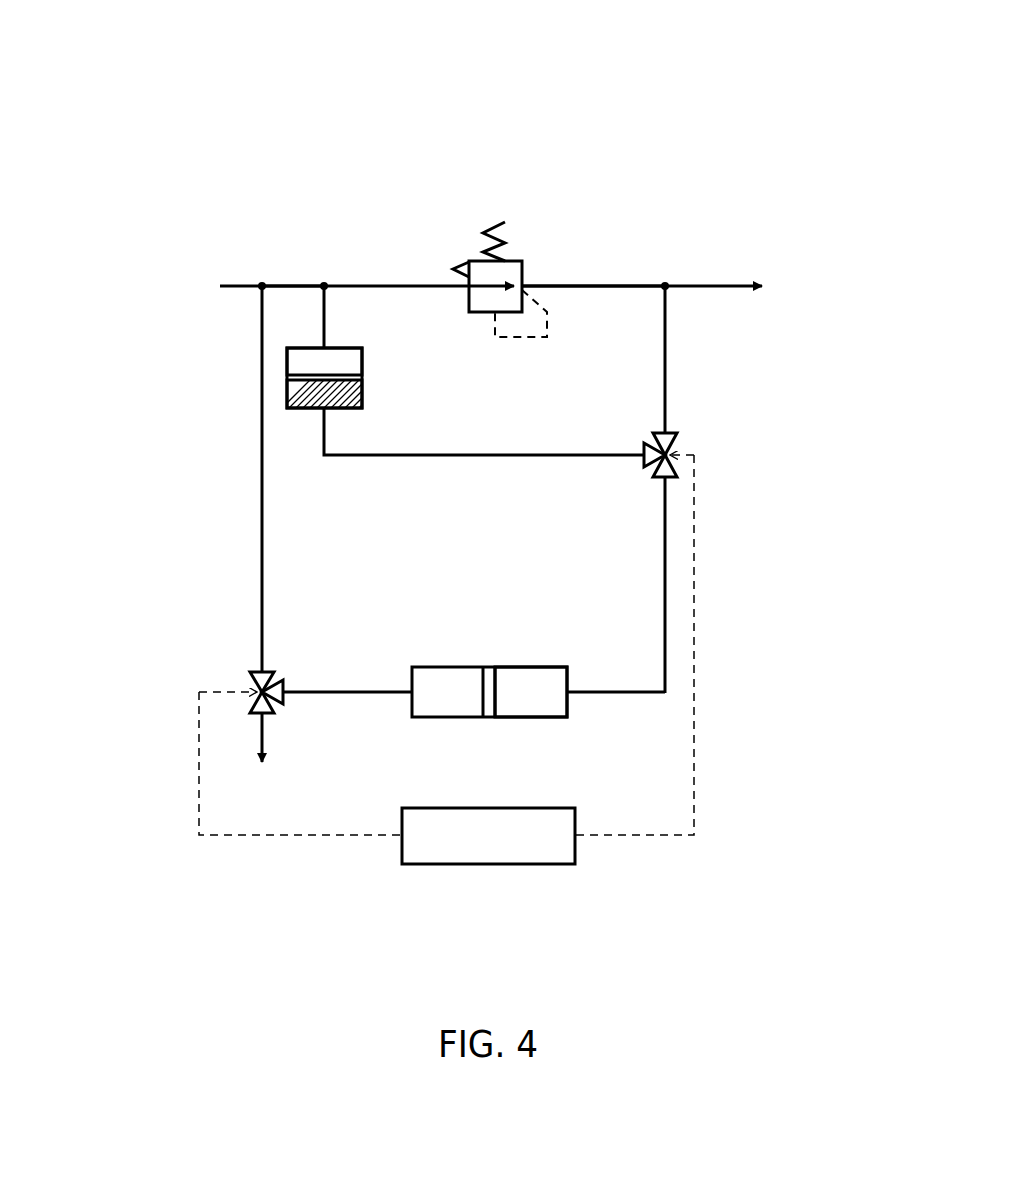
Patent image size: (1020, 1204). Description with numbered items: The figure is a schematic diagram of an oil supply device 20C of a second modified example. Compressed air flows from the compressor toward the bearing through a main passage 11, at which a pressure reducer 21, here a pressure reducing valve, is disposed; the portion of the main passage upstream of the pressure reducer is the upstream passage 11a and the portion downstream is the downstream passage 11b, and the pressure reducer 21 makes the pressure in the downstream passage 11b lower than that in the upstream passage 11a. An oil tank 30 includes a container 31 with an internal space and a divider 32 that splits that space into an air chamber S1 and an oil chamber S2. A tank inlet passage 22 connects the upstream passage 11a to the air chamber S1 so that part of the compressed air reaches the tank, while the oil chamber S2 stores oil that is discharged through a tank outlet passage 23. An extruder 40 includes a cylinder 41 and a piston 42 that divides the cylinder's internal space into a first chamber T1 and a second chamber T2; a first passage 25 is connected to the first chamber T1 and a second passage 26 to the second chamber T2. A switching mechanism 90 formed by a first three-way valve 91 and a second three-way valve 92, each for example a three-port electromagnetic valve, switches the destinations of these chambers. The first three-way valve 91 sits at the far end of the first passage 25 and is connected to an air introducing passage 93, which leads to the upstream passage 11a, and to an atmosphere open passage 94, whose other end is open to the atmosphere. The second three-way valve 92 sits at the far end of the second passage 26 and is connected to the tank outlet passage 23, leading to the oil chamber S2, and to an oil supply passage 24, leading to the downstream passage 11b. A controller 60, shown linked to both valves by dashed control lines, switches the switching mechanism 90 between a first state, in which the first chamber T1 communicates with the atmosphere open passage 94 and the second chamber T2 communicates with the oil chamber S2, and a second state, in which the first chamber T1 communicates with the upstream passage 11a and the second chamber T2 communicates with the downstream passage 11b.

The oil supply device 20C is at (603, 128).
The main passage 11 is at (722, 284).
The upstream passage 11a is at (360, 285).
The downstream passage 11b is at (612, 285).
The pressure reducer 21 is at (512, 260).
The tank inlet passage 22 is at (326, 313).
The tank outlet passage 23 is at (518, 454).
The oil supply passage 24 is at (667, 380).
The first passage 25 is at (398, 696).
The second passage 26 is at (570, 695).
The oil tank 30 is at (354, 416).
The container 31 is at (350, 347).
The divider 32 is at (363, 379).
The air chamber S1 is at (354, 362).
The oil chamber S2 is at (363, 398).
The extruder 40 is at (511, 697).
The cylinder 41 is at (528, 666).
The piston 42 is at (489, 718).
The first chamber T1 is at (435, 718).
The second chamber T2 is at (528, 718).
The controller 60 is at (487, 865).
The switching mechanism 90 is at (823, 625).
The first three-way valve 91 is at (253, 674).
The second three-way valve 92 is at (680, 440).
The air introducing passage 93 is at (260, 548).
The atmosphere open passage 94 is at (265, 735).